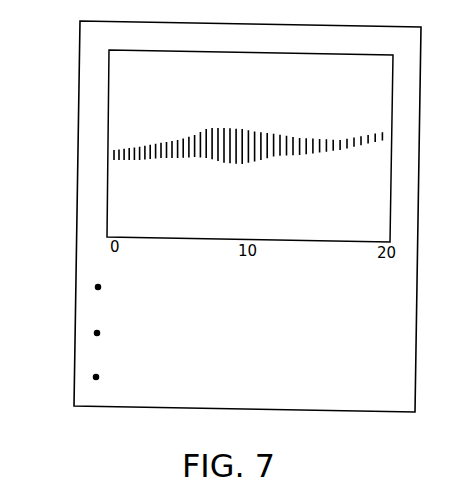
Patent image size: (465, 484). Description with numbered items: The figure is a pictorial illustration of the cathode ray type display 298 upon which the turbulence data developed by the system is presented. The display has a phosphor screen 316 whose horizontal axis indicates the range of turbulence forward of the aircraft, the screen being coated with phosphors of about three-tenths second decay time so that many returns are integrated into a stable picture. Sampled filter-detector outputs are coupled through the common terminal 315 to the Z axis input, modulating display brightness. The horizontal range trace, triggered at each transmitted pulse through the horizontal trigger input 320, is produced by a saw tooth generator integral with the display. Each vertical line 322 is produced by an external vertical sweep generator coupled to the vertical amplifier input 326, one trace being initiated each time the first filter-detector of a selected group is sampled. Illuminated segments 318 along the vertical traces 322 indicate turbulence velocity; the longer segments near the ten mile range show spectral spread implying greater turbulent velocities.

The cathode ray type display 298 is at (272, 20).
The phosphor screen 316 is at (385, 97).
The vertical coordinates 318 is at (248, 148).
The vertical line 322 is at (246, 163).
The horizontal trigger input 320 is at (98, 287).
The common terminal 315 is at (97, 333).
The vertical amplifier input 326 is at (96, 377).